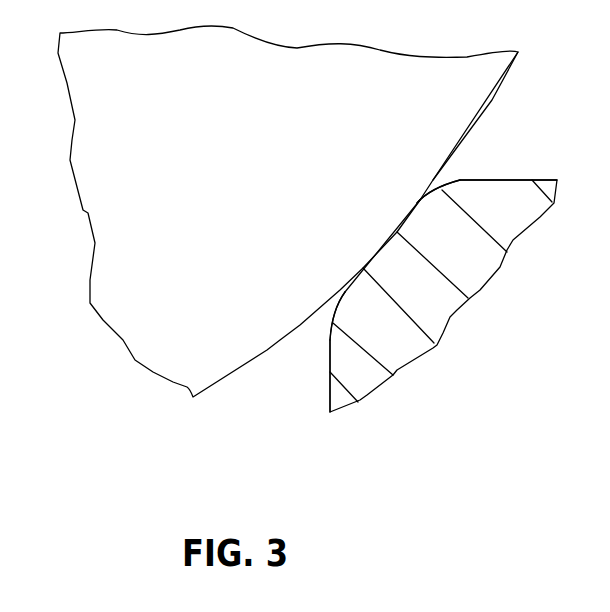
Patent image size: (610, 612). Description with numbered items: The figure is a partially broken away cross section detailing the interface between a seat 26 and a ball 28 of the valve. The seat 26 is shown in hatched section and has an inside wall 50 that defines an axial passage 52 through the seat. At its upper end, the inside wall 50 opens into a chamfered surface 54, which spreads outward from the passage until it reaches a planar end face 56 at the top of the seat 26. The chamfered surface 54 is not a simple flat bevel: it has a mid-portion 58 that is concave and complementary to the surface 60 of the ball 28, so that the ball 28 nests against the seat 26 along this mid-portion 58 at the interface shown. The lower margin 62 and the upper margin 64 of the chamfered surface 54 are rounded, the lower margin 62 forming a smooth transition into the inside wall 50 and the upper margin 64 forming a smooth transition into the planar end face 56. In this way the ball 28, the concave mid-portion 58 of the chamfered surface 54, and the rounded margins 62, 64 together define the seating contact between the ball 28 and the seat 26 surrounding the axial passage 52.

The seat 26 is at (442, 311).
The ball 28 is at (235, 133).
The inside wall 50 is at (328, 395).
The axial passage 52 is at (243, 463).
The chamfered surface 54 is at (318, 323).
The planar end face 56 is at (532, 180).
The mid-portion 58 is at (420, 214).
The surface of ball 60 is at (492, 100).
The lower margin 62 is at (345, 293).
The upper margin 64 is at (446, 186).